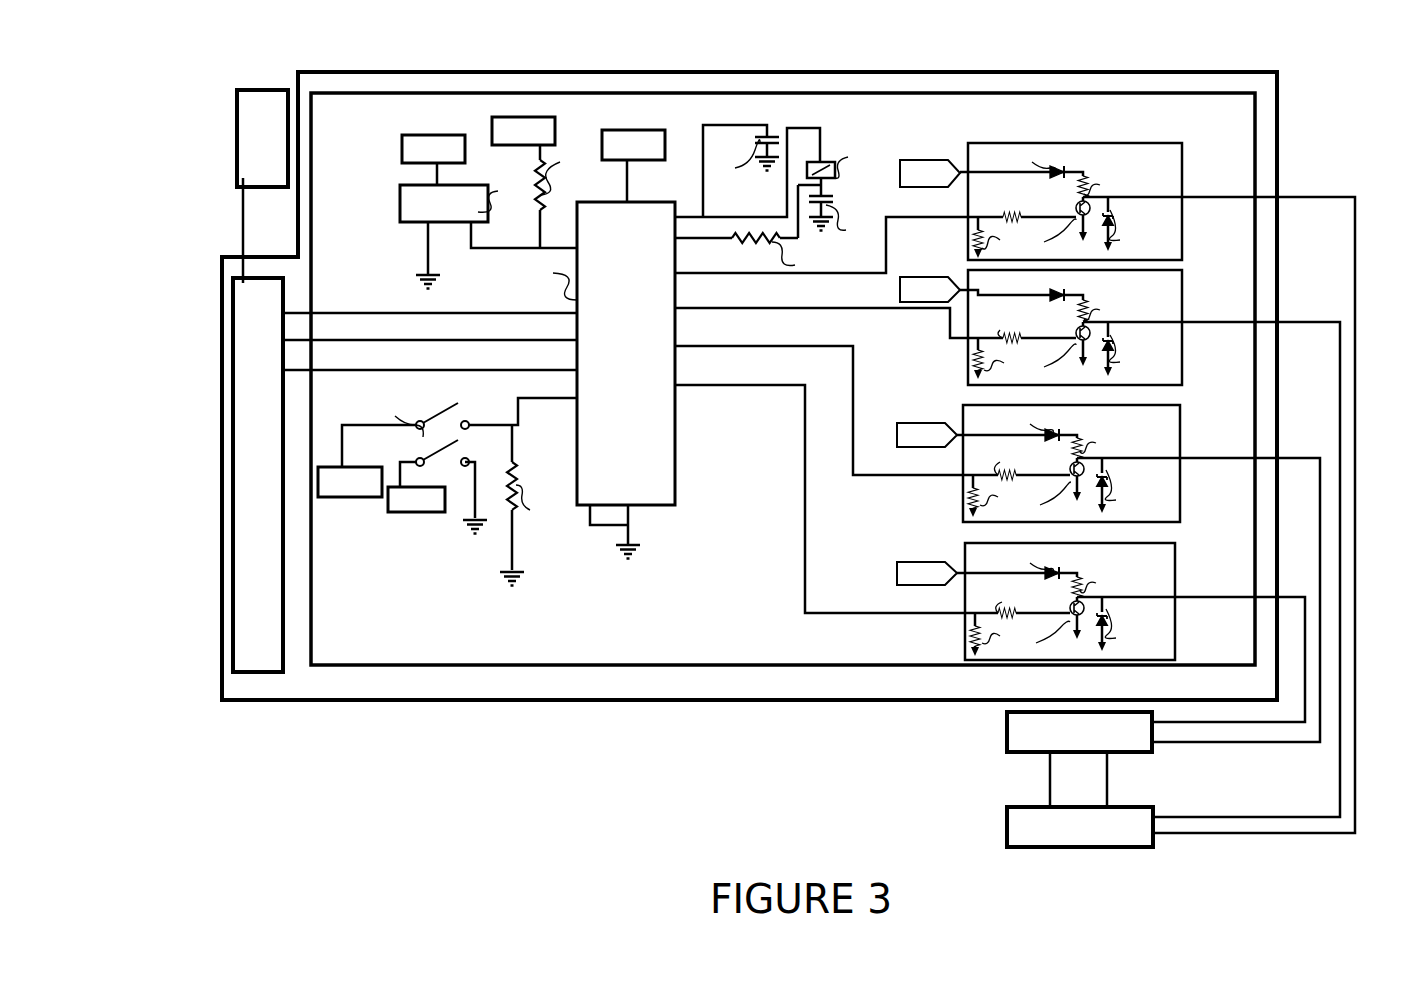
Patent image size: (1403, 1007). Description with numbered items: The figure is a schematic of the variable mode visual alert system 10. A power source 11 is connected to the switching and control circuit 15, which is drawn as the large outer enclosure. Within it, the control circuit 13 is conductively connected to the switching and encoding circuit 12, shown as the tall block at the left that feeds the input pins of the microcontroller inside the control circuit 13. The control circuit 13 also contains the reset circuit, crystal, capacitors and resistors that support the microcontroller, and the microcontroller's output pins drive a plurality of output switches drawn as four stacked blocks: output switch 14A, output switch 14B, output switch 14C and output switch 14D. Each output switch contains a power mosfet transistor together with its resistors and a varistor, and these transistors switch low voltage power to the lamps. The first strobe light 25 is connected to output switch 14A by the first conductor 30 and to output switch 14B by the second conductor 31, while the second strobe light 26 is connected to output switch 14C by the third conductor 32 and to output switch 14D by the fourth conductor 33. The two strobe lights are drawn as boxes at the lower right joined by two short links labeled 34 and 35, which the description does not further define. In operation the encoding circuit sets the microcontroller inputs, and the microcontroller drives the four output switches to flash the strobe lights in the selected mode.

The variable mode visual alert system 10 is at (1092, 56).
The power source 11 is at (263, 115).
The switching and encoding circuit 12 is at (257, 653).
The control circuit 13 is at (657, 644).
The output switch 14A is at (968, 247).
The output switch 14B is at (968, 372).
The output switch 14C is at (963, 467).
The output switch 14D is at (965, 607).
The switching and control circuit 15 is at (630, 702).
The first strobe light 25 is at (1003, 812).
The second strobe light 26 is at (1003, 715).
The first conductor 30 is at (1183, 181).
The second conductor 31 is at (1183, 311).
The third conductor 32 is at (1181, 447).
The fourth conductor 33 is at (1176, 585).
The connector 34 is at (1050, 786).
The connector 35 is at (1107, 776).